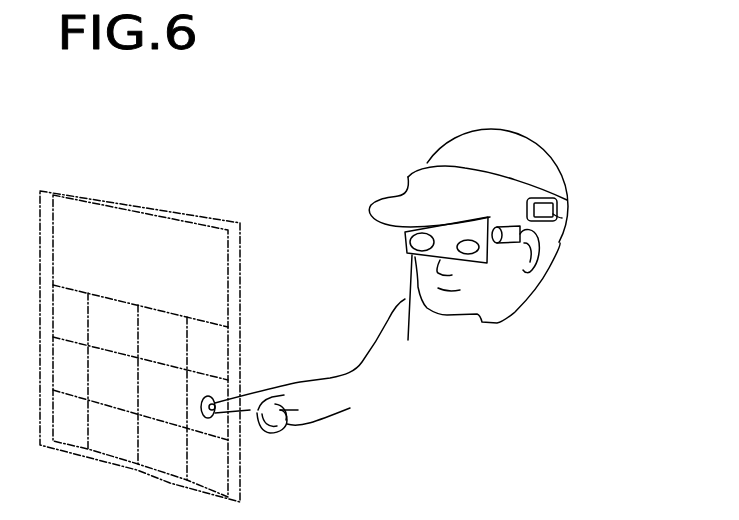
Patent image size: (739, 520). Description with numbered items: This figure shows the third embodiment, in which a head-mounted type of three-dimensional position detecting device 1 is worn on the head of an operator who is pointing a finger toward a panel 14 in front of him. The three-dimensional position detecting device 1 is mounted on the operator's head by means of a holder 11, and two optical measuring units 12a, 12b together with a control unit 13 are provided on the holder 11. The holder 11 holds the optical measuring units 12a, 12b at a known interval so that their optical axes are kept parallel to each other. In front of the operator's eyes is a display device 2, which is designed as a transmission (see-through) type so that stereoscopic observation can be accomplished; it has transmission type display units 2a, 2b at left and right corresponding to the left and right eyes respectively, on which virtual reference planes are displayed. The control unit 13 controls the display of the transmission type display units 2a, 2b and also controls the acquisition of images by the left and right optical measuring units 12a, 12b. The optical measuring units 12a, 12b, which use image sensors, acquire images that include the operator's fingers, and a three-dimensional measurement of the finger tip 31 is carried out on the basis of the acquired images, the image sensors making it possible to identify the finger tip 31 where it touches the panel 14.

The three-dimensional position detecting device 1 is at (409, 177).
The display device 2 is at (406, 248).
The transmission type display unit 2a is at (419, 317).
The transmission type display unit 2b is at (487, 263).
The holder 11 is at (557, 210).
The optical measuring unit 12a is at (396, 228).
The optical measuring unit 12b is at (503, 220).
The control unit 13 is at (557, 214).
The display panel 14 is at (240, 473).
The finger tip 31 is at (217, 400).